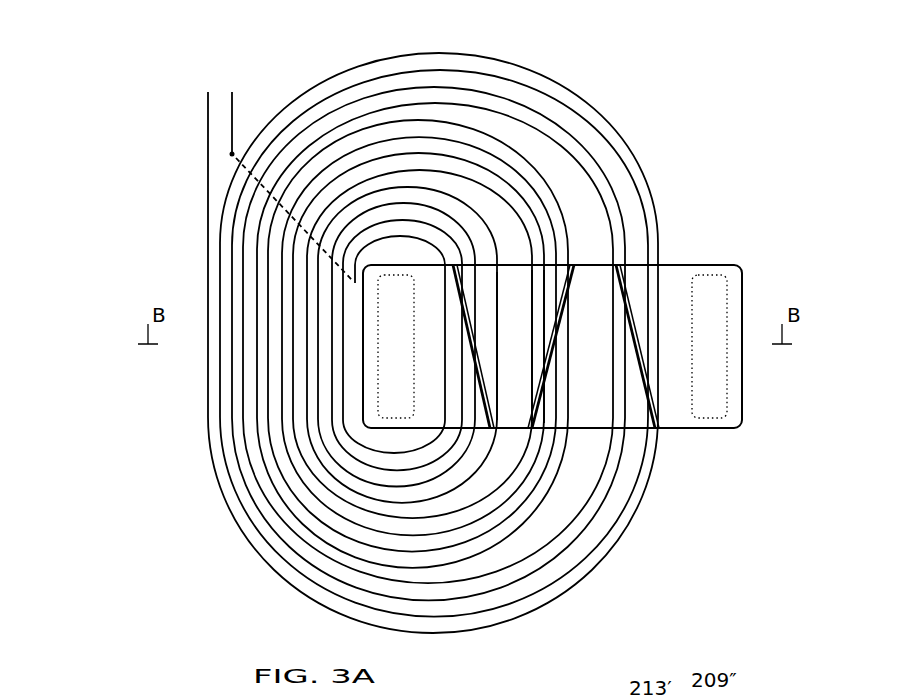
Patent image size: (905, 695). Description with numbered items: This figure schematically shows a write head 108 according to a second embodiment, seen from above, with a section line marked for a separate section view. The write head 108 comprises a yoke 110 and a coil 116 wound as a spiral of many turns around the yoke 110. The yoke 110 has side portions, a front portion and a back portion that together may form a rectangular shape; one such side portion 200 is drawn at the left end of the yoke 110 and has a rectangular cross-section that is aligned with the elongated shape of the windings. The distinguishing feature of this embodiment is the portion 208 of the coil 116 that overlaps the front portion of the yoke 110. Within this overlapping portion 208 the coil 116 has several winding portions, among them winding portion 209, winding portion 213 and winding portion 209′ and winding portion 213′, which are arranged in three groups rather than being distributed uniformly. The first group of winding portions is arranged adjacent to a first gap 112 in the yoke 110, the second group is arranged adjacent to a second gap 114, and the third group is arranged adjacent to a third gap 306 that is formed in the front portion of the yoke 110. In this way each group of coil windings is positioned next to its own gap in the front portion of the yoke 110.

The write head 108 is at (154, 88).
The yoke 110 is at (750, 387).
The first gap 112 is at (455, 428).
The second gap 114 is at (615, 407).
The coil 116 is at (590, 590).
The side portion 200 is at (392, 367).
The portion of the coil 208 is at (584, 432).
The winding portion 209 is at (455, 265).
The winding portion 209′ is at (535, 280).
The winding portion 213 is at (498, 300).
The winding portion 213′ is at (548, 285).
The third gap 306 is at (640, 315).